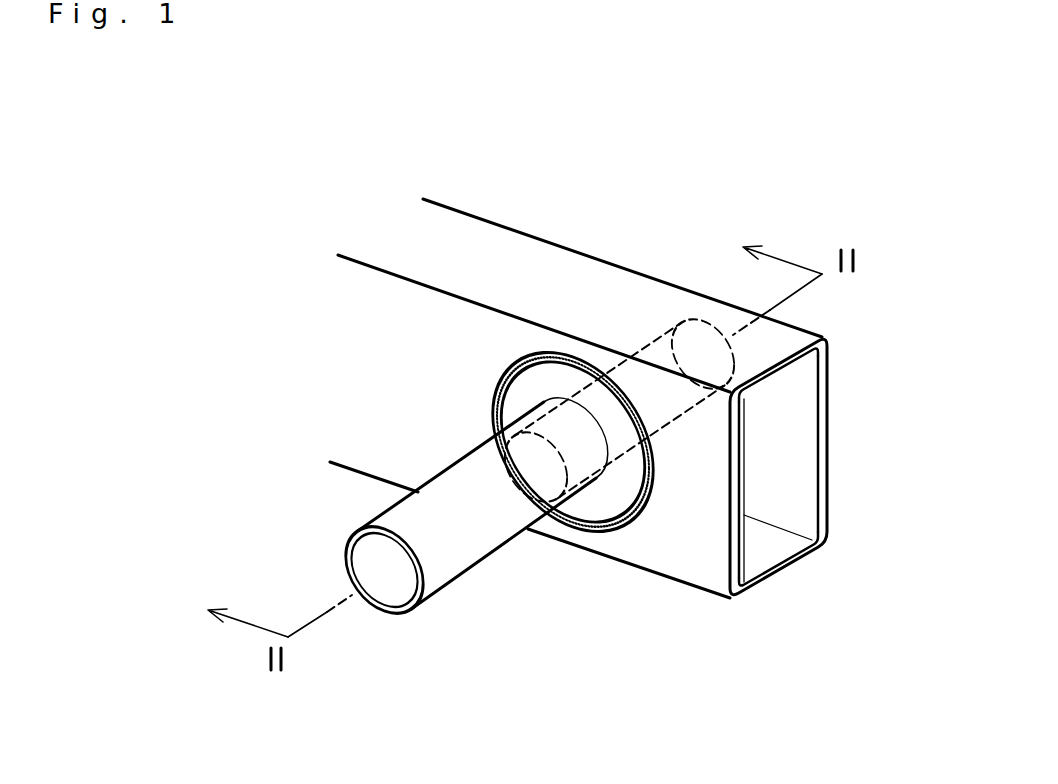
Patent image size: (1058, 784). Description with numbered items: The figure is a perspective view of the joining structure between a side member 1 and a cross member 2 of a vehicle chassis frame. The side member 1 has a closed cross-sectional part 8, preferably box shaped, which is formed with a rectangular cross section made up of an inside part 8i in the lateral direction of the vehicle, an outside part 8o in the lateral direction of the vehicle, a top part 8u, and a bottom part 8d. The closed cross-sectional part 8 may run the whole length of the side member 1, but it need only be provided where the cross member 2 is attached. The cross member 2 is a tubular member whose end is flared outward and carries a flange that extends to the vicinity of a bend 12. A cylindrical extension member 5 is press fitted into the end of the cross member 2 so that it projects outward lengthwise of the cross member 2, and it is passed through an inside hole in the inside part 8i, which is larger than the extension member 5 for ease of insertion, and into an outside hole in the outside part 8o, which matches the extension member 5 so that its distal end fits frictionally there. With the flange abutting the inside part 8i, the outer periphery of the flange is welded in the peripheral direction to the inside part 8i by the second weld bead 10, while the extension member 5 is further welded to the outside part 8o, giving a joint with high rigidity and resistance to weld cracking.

The side member 1 is at (530, 249).
The cross member 2 is at (547, 368).
The extension member 5 is at (656, 341).
The closed cross-sectional part 8 is at (844, 411).
The top part 8u is at (772, 367).
The bottom part 8d is at (788, 565).
The outside part 8o is at (822, 507).
The inside part 8i is at (735, 541).
The second weld bead 10 is at (650, 477).
The bend 12 is at (578, 350).